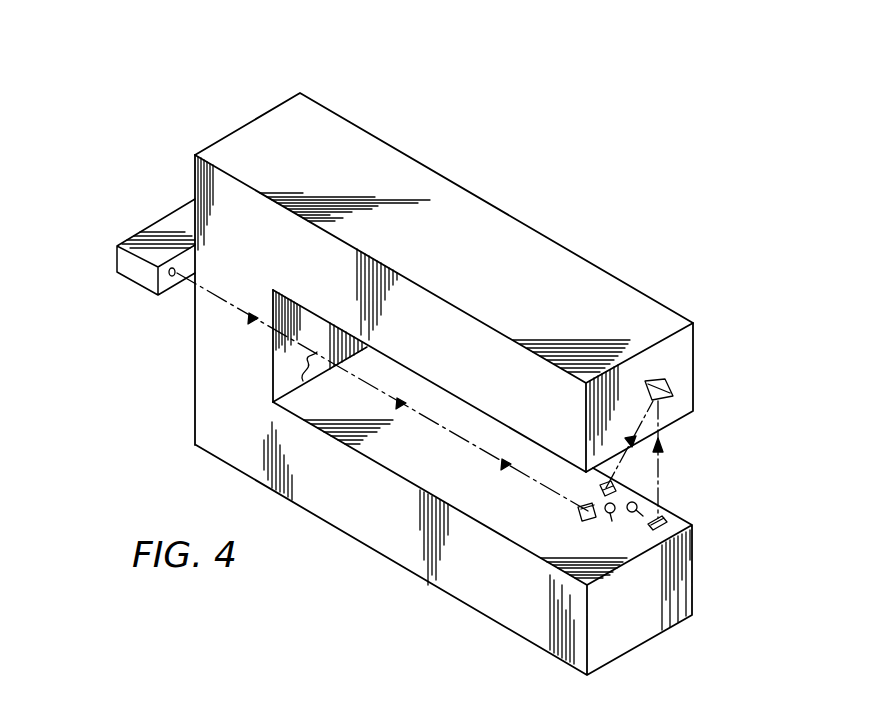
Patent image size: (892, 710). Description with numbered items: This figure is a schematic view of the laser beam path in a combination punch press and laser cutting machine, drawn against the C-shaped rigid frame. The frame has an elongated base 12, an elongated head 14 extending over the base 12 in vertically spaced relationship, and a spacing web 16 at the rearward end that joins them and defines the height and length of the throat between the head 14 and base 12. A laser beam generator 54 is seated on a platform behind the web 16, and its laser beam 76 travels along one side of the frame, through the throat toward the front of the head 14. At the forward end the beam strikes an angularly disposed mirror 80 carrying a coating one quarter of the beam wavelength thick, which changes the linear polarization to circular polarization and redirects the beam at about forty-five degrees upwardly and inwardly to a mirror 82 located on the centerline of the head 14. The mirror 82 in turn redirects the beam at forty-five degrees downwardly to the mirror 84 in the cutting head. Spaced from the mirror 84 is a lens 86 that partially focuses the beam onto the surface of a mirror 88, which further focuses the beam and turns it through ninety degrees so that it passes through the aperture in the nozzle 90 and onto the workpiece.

The base 12 is at (392, 533).
The head 14 is at (512, 243).
The web 16 is at (203, 373).
The laser beam generator 54 is at (163, 216).
The laser beam 76 is at (275, 397).
The mirror 80 is at (578, 512).
The mirror 82 is at (673, 387).
The mirror 84 is at (665, 518).
The lens 86 is at (630, 515).
The mirror 88 is at (609, 492).
The nozzle 90 is at (605, 517).